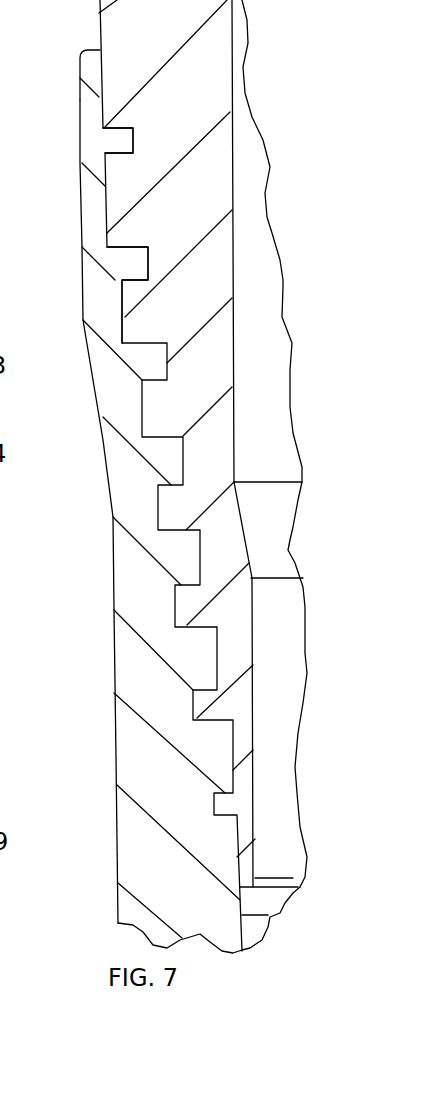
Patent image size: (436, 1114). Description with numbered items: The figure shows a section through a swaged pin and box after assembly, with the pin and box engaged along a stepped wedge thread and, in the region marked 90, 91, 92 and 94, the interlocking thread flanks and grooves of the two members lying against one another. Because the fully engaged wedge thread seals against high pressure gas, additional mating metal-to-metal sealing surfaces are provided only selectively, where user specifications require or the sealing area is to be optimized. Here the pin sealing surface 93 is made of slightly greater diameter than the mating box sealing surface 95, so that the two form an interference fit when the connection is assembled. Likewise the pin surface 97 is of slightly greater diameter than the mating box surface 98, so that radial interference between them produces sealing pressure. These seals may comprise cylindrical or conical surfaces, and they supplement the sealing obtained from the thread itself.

The thread groove 90 is at (128, 313).
The box member 91 is at (141, 407).
The thread tooth 92 is at (98, 130).
The pin sealing surface 93 is at (100, 89).
The pin member 94 is at (213, 803).
The box sealing surface 95 is at (100, 98).
The pin surface 97 is at (238, 868).
The box surface 98 is at (240, 860).